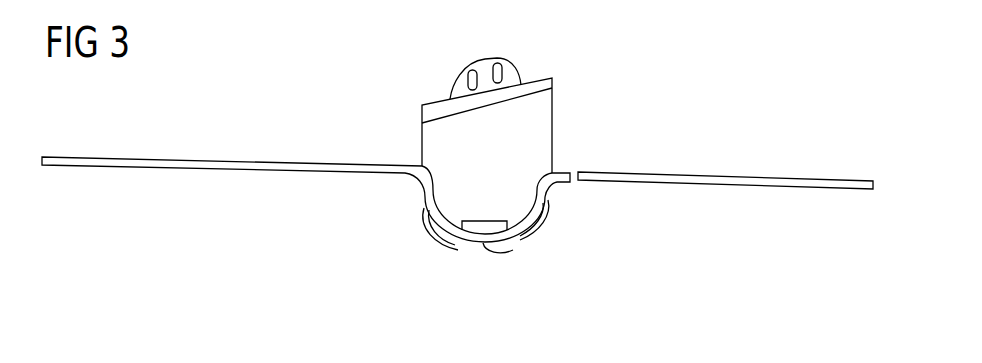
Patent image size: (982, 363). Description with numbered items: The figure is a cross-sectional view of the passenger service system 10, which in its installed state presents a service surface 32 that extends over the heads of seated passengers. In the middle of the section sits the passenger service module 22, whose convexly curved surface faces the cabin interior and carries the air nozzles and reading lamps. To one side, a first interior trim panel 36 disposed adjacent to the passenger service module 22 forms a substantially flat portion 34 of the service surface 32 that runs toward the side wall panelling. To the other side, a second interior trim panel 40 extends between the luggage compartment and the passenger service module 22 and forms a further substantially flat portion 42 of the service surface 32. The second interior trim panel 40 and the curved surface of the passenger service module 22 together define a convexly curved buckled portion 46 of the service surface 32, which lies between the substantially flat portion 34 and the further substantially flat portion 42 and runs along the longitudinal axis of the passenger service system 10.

The passenger service system 10 is at (773, 100).
The passenger service module 22 is at (545, 118).
The service surface 32 is at (737, 208).
The substantially flat portion 34 is at (653, 182).
The first interior trim panel 36 is at (710, 171).
The second interior trim panel 40 is at (140, 157).
The further substantially flat portion 42 is at (214, 171).
The buckled portion 46 is at (465, 239).